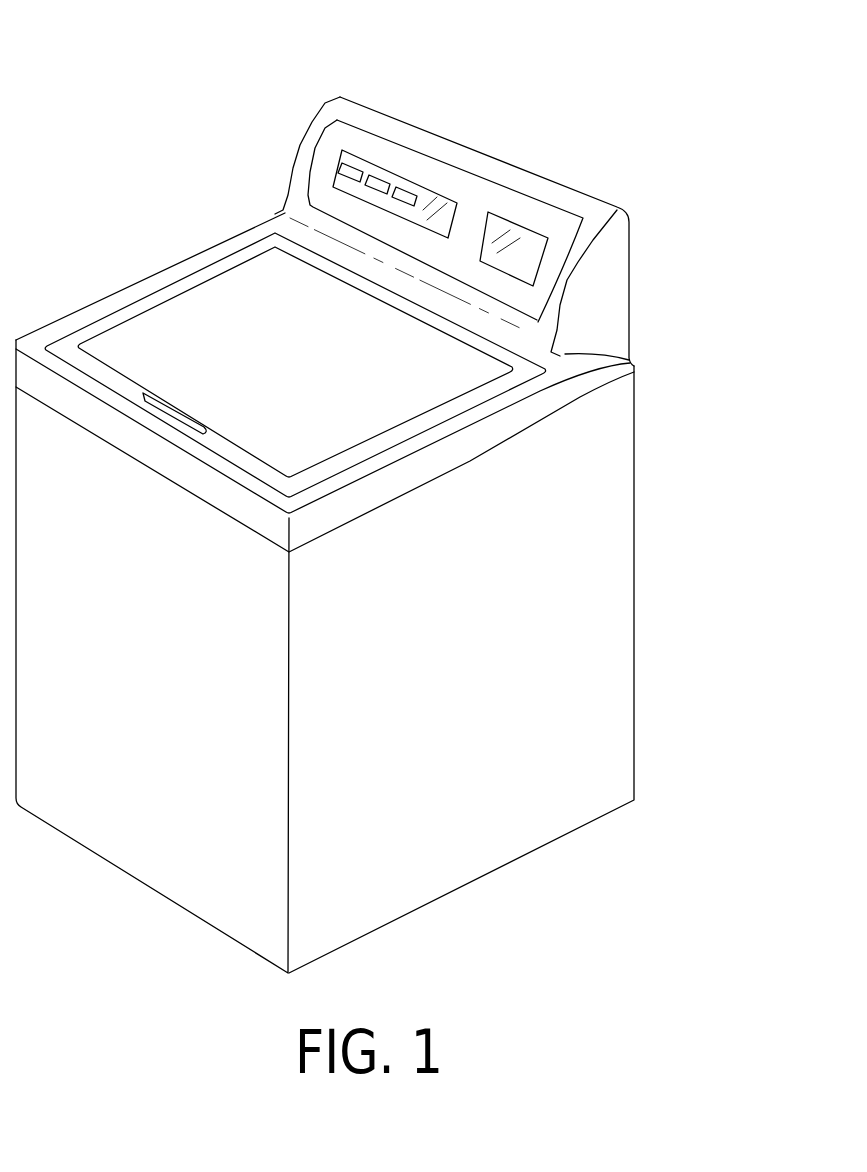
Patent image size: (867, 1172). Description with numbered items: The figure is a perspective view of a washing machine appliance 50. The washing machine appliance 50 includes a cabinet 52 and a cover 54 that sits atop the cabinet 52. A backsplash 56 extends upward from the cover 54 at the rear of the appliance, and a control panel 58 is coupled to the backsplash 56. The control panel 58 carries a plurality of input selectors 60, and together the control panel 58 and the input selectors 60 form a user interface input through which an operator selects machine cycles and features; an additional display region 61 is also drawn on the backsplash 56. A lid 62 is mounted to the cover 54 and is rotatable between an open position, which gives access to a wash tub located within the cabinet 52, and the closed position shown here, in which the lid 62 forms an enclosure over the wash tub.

The washing machine appliance 50 is at (109, 89).
The cabinet 52 is at (676, 546).
The cover 54 is at (104, 318).
The backsplash 56 is at (480, 205).
The control panel 58 is at (434, 200).
The input selectors 60 is at (405, 196).
The secondary display 61 is at (530, 238).
The lid 62 is at (255, 290).